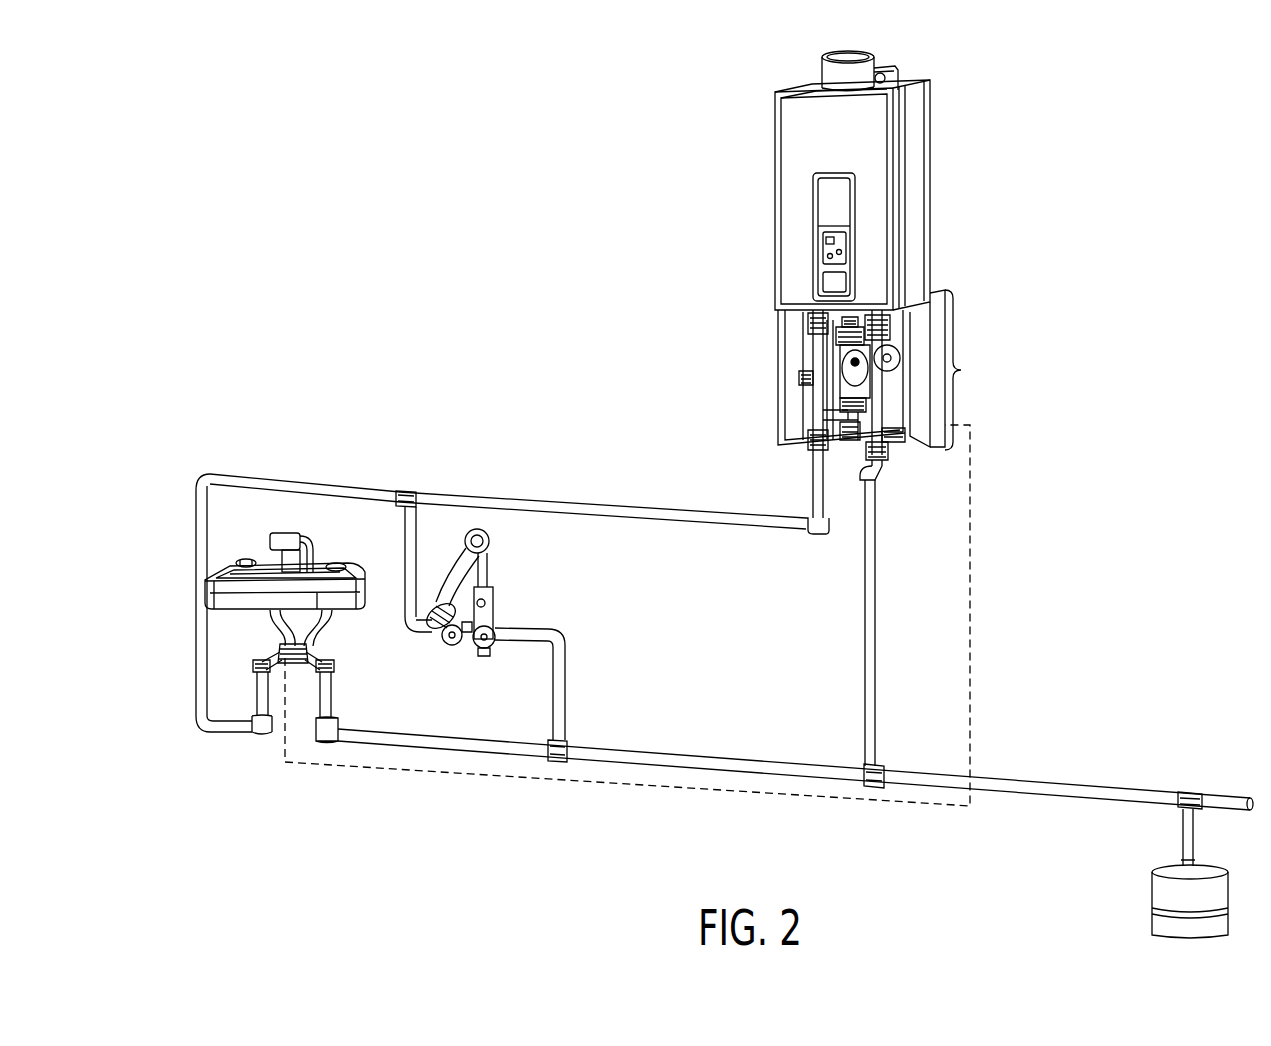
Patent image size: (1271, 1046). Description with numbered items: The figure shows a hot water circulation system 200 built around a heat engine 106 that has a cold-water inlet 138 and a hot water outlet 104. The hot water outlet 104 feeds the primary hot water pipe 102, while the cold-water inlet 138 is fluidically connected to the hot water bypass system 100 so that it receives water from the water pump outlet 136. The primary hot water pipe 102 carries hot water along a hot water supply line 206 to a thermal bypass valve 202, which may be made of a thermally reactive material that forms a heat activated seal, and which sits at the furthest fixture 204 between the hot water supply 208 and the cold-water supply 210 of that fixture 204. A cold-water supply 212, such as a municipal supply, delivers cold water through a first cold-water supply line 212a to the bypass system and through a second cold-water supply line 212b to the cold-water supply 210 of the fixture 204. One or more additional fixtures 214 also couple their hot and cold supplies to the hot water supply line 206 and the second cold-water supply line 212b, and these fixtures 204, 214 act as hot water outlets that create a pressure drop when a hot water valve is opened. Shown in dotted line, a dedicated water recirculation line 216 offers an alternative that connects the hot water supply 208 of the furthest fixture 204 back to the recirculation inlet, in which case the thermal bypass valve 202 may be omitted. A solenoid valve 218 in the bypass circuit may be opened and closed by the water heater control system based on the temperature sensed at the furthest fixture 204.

The hot water bypass system 100 is at (886, 370).
The primary hot water pipe 102 is at (812, 440).
The hot water outlet 104 is at (802, 315).
The heat engine 106 is at (913, 176).
The water pump outlet 136 is at (886, 322).
The cold-water inlet 138 is at (870, 330).
The hot water circulation system 200 is at (605, 318).
The thermal bypass valve 202 is at (296, 665).
The furthest fixture 204 is at (318, 568).
The hot water supply line 206 is at (453, 497).
The hot water supply 208 is at (280, 650).
The cold-water supply 210 is at (328, 652).
The cold-water supply 212 is at (1080, 784).
The first cold-water supply line 212a is at (876, 583).
The second cold-water supply line 212b is at (340, 709).
The additional fixture 214 is at (497, 613).
The dedicated water recirculation line 216 is at (975, 578).
The solenoid valve 218 is at (800, 375).